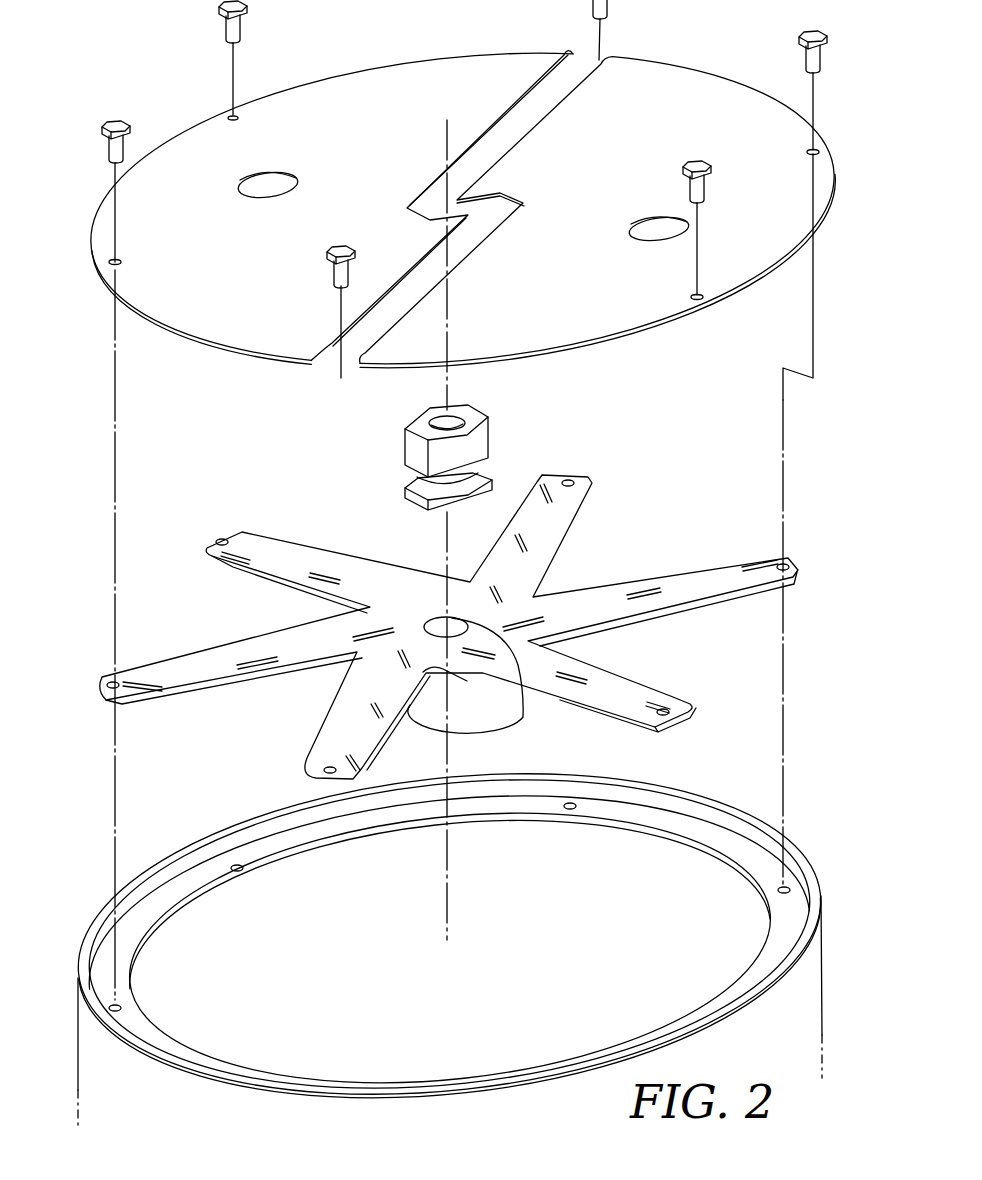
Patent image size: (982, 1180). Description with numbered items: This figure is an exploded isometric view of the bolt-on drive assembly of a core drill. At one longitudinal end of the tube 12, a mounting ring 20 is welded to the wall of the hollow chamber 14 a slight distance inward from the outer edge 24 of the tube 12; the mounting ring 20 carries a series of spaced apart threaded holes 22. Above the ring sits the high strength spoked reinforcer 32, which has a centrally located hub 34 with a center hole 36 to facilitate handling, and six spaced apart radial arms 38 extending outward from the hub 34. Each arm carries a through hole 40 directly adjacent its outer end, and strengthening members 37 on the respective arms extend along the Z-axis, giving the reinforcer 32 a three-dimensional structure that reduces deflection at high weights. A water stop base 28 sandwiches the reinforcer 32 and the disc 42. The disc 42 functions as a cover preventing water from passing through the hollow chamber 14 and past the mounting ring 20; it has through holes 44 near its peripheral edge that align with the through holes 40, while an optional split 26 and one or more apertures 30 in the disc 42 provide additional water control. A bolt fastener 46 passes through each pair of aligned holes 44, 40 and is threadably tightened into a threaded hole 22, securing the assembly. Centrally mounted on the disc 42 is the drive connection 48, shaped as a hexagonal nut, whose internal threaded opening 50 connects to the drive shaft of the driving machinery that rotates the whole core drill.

The tube 12 is at (813, 848).
The hollow chamber 14 is at (449, 933).
The mounting ring 20 is at (266, 855).
The threaded holes 22 is at (125, 1008).
The outer edge 24 is at (172, 866).
The split 26 is at (538, 100).
The water stop base 28 is at (423, 702).
The apertures 30 is at (265, 173).
The high strength spoked reinforcer 32 is at (700, 565).
The hub 34 is at (407, 620).
The center hole 36 is at (480, 668).
The strengthening members 37 is at (287, 686).
The radial arms 38 is at (273, 556).
The through holes 40 is at (100, 682).
The disc 42 is at (463, 187).
The through holes 44 is at (108, 280).
The bolt fastener 46 is at (106, 150).
The drive connection 48 is at (459, 455).
The internal threaded opening 50 is at (440, 420).